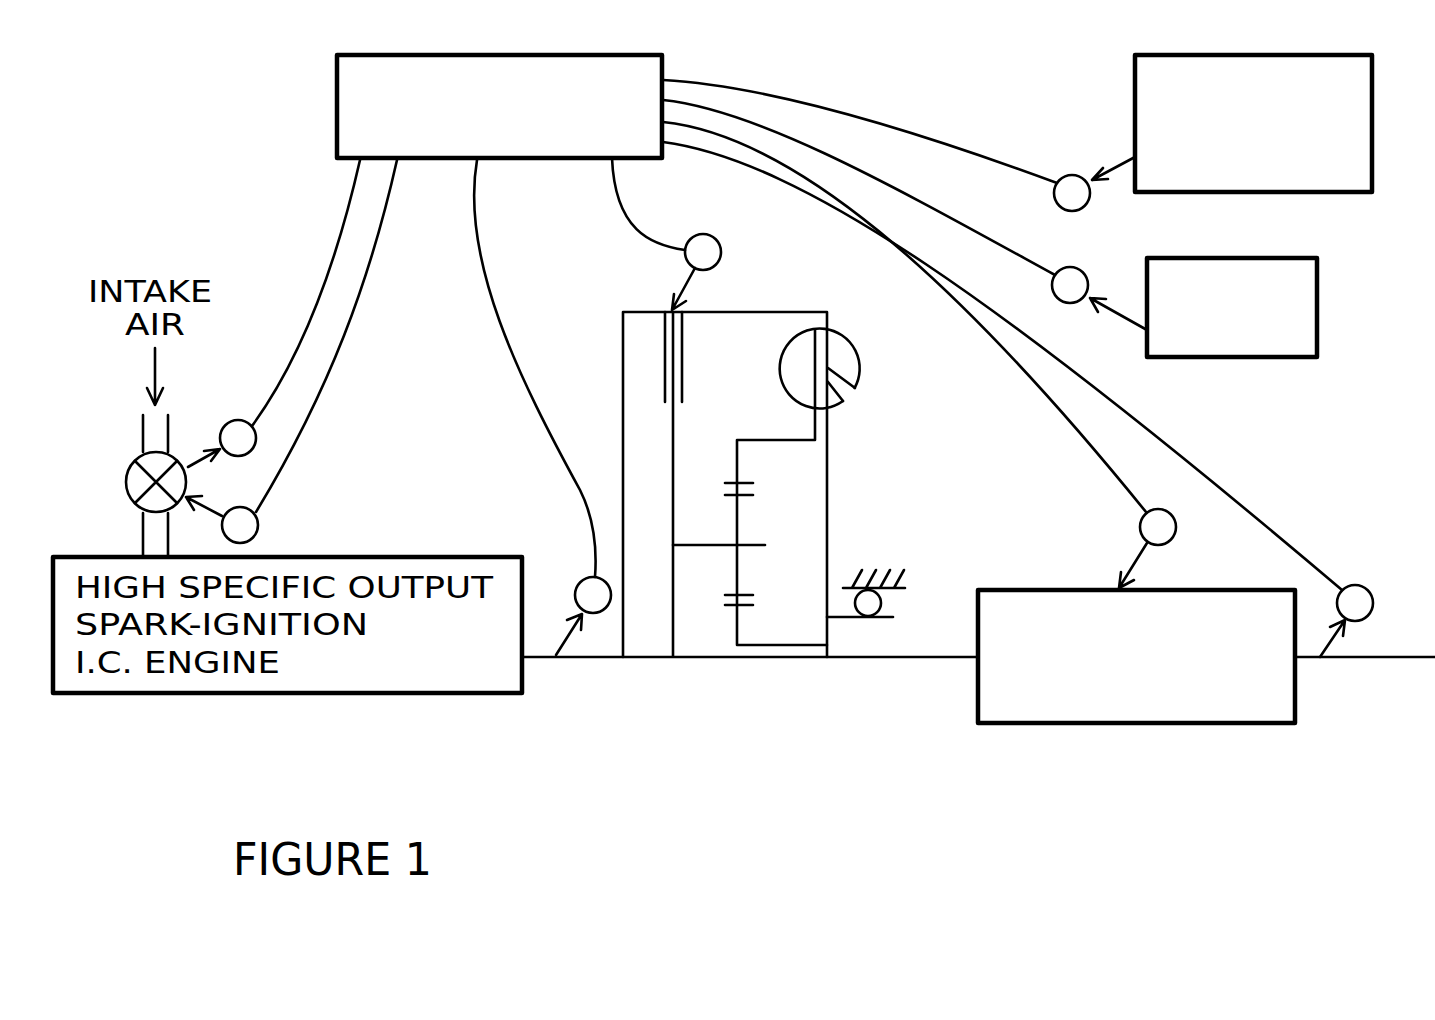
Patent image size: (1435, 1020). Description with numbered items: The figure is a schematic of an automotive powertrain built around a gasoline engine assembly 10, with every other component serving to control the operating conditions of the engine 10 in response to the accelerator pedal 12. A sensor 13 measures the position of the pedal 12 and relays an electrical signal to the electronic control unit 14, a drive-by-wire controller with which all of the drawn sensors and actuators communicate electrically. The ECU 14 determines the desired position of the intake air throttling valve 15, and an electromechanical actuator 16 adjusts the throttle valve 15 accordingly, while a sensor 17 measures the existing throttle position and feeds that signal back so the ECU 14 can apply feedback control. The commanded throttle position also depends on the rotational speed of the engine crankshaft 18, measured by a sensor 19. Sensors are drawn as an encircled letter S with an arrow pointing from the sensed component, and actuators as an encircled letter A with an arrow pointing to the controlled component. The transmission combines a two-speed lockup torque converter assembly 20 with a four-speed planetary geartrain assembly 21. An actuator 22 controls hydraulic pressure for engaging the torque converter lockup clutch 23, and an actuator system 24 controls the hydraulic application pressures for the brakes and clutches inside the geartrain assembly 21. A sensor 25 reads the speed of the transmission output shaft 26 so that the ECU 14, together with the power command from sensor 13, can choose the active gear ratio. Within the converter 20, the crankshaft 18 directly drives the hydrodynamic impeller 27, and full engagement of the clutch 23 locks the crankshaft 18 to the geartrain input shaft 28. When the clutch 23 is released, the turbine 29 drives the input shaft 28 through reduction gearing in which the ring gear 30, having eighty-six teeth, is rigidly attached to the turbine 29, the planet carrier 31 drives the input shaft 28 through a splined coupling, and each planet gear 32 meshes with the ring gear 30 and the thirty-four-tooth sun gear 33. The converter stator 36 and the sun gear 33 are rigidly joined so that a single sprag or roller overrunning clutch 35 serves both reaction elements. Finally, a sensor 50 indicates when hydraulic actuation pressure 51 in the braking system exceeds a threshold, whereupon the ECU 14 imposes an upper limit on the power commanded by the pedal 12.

The gasoline engine assembly 10 is at (392, 441).
The accelerator pedal 12 is at (1215, 357).
The sensor 13 is at (1075, 268).
The electronic control unit 14 is at (337, 113).
The intake air throttling valve 15 is at (125, 488).
The electromechanical actuator 16 is at (258, 530).
The sensor 17 is at (240, 420).
The engine crankshaft 18 is at (573, 657).
The sensor 19 is at (584, 582).
The two-speed lockup torque converter assembly 20 is at (623, 272).
The 4-speed planetary geartrain assembly 21 is at (1105, 723).
The actuator 22 is at (716, 265).
The torque converter lockup clutch 23 is at (682, 355).
The actuator system 24 is at (1170, 542).
The sensor 25 is at (1366, 620).
The transmission output shaft 26 is at (1355, 657).
The hydrodynamic converter impeller 27 is at (853, 345).
The input shaft of the planetary geartrain 28 is at (870, 657).
The torque converter turbine 29 is at (780, 372).
The ring gear 30 is at (737, 480).
The planet carrier 31 is at (673, 552).
The planet gear 32 is at (740, 508).
The sun gear 33 is at (740, 618).
The overrunning clutch 35 is at (872, 618).
The converter stator 36 is at (843, 405).
The sensor 50 is at (1073, 176).
The hydraulic actuation pressure 51 is at (1135, 108).